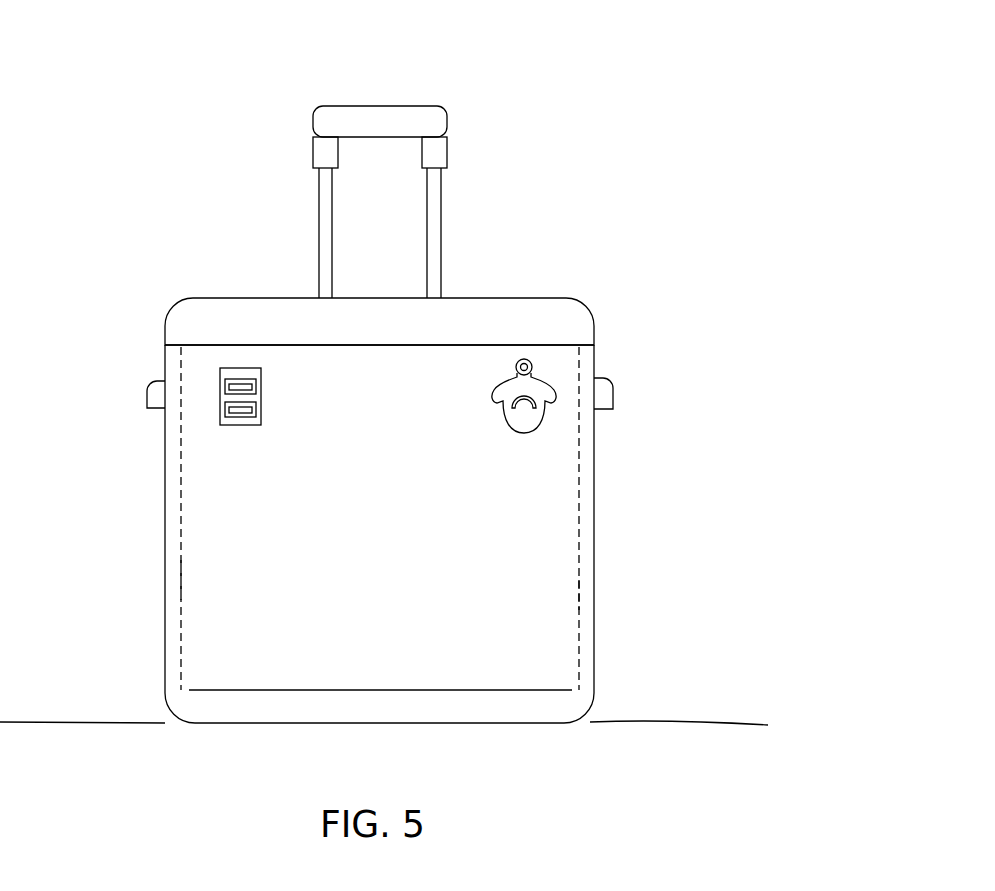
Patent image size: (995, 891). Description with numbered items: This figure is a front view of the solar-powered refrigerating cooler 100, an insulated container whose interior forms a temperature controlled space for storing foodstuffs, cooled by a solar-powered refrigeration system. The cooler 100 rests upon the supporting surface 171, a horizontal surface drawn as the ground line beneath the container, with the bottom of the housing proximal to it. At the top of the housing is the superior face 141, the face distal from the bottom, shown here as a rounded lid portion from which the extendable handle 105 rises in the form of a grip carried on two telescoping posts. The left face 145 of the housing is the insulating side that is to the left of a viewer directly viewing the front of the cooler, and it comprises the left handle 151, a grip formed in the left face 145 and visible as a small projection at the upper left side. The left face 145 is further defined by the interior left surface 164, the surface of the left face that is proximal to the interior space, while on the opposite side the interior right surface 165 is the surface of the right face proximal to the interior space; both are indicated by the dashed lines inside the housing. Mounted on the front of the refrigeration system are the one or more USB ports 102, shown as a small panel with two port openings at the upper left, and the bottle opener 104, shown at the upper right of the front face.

The solar-powered refrigerating cooler 100 is at (121, 105).
The USB ports 102 is at (261, 423).
The bottle opener 104 is at (513, 427).
The extendable handle 105 is at (445, 152).
The superior face 141 is at (563, 318).
The left face 145 is at (166, 511).
The left handle 151 is at (155, 409).
The interior left surface 164 is at (181, 577).
The interior right surface 165 is at (579, 595).
The supporting surface 171 is at (58, 723).